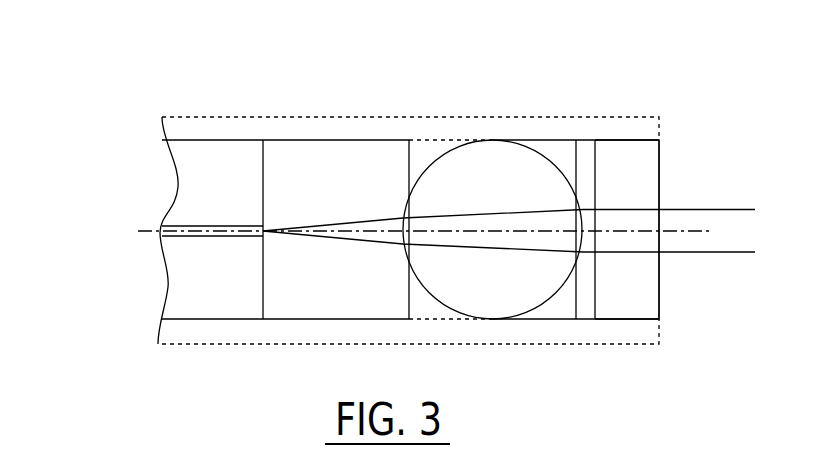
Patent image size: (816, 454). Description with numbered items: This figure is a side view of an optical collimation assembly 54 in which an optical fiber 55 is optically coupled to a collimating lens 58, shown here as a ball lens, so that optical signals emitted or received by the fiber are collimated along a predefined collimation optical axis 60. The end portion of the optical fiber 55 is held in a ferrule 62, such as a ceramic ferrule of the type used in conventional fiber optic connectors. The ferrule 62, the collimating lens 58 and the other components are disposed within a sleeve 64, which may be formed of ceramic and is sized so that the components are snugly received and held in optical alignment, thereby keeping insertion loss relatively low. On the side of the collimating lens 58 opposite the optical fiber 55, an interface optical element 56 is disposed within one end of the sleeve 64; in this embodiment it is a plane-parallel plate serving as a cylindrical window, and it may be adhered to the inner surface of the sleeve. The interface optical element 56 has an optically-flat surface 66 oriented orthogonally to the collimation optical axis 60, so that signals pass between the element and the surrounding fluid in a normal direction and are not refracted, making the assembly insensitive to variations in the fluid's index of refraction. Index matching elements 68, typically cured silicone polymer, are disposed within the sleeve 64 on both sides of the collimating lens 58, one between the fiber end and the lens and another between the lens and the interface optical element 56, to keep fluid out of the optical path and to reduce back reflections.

The optical collimation assembly 54 is at (537, 373).
The optical fiber 55 is at (200, 225).
The interface optical element 56 is at (628, 160).
The collimating lens 58 is at (462, 165).
The collimation optical axis 60 is at (700, 224).
The ferrule 62 is at (195, 177).
The sleeve 64 is at (208, 125).
The optically-flat surface 66 is at (655, 175).
The index matching elements 68 is at (330, 158).